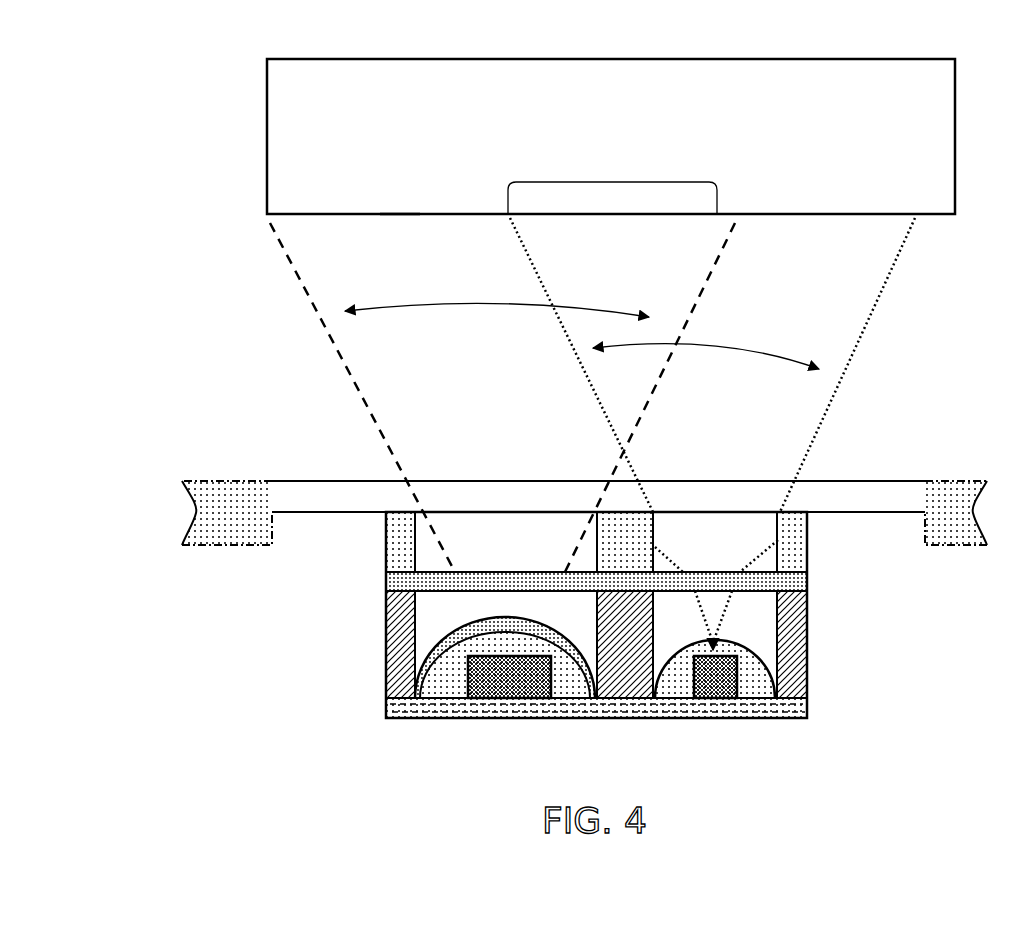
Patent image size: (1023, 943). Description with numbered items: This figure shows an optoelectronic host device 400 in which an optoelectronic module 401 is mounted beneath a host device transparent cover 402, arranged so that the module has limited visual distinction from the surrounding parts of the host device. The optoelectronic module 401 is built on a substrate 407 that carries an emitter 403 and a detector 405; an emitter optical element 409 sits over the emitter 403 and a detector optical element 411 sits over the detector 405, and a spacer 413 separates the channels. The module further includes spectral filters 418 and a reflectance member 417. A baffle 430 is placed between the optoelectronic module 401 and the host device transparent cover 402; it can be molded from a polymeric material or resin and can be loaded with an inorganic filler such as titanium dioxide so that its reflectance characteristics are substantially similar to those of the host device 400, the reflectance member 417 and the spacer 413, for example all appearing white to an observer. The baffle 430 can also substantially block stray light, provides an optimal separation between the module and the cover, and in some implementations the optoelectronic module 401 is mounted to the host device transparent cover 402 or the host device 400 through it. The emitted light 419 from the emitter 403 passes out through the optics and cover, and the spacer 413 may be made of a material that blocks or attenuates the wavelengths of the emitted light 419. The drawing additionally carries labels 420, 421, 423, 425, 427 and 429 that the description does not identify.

The host device 400 is at (186, 450).
The optoelectronic module 401 is at (316, 743).
The host device transparent cover 402 is at (322, 503).
The emitter 403 is at (733, 677).
The detector 405 is at (485, 682).
The substrate 407 is at (397, 712).
The emitter optical element 409 is at (750, 648).
The detector optical element 411 is at (432, 687).
The spacer 413 is at (808, 618).
The reflectance member 417 is at (805, 580).
The spectral filters 418 is at (458, 632).
The emitted light 419 is at (870, 314).
The housing portion 420 is at (215, 532).
The second irradiation range 421 is at (712, 348).
The irradiated object 423 is at (378, 114).
The irradiated surface 425 is at (400, 208).
The first irradiation range 427 is at (395, 302).
The display region 429 is at (548, 182).
The baffle 430 is at (400, 540).